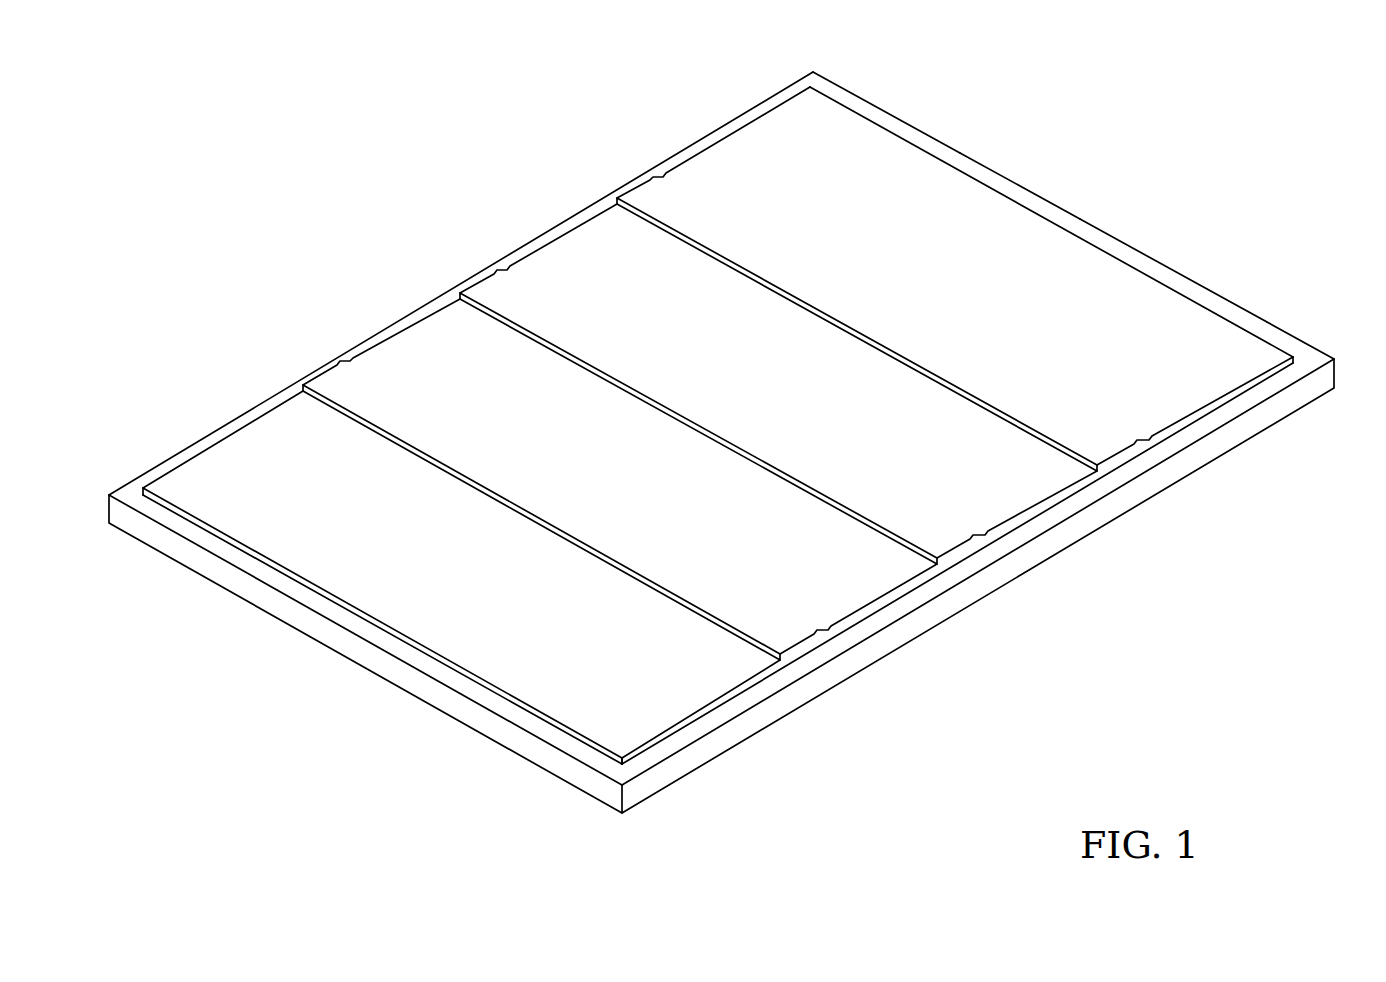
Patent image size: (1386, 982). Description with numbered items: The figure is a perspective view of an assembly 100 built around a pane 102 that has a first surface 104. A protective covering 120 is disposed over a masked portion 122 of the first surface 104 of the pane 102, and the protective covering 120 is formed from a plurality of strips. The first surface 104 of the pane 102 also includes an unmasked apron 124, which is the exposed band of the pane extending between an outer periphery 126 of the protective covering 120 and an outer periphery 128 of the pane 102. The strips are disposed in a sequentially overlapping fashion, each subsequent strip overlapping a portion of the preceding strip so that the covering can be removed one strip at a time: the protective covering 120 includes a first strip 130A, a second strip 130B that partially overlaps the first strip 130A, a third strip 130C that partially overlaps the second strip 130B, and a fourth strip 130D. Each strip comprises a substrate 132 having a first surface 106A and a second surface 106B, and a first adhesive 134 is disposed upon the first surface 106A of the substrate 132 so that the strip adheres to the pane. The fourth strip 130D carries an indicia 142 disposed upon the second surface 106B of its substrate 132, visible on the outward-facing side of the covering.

The assembly 100 is at (721, 442).
The pane 102 is at (846, 678).
The first surface 104 is at (911, 128).
The first surface 106A is at (405, 643).
The second surface 106B is at (1200, 370).
The protective covering 120 is at (521, 722).
The masked portion 122 is at (452, 697).
The unmasked apron 124 is at (1016, 190).
The outer periphery 126 is at (1063, 228).
The outer periphery 128 is at (1151, 257).
The first strip 130A is at (702, 702).
The second strip 130B is at (869, 595).
The third strip 130C is at (1009, 503).
The fourth strip 130D is at (1195, 390).
The substrate 132 is at (627, 733).
The first adhesive 134 is at (433, 659).
The indicia 142 is at (1040, 298).